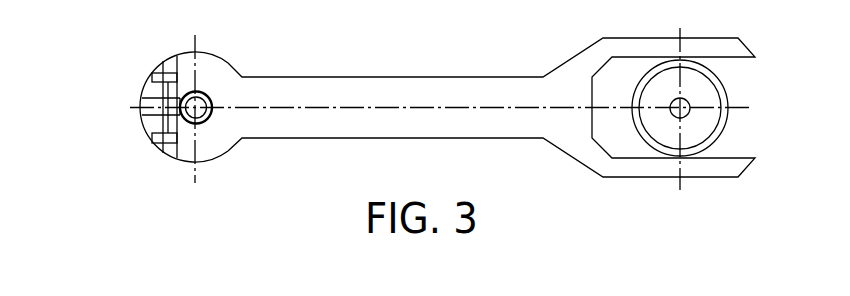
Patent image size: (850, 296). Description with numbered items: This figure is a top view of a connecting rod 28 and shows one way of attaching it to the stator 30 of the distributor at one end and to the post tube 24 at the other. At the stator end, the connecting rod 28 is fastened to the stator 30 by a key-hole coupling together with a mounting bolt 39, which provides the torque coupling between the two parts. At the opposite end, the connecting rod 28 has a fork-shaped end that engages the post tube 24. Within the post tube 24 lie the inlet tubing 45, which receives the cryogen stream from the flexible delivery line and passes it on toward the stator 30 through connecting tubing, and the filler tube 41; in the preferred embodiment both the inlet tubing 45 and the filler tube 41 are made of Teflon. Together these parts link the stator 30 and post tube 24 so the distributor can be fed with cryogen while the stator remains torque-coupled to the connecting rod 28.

The connecting rod 28 is at (388, 54).
The stator 30 is at (208, 120).
The mounting bolt 39 is at (155, 146).
The post tube 24 is at (728, 92).
The filler tube 41 is at (667, 130).
The inlet tubing 45 is at (688, 115).